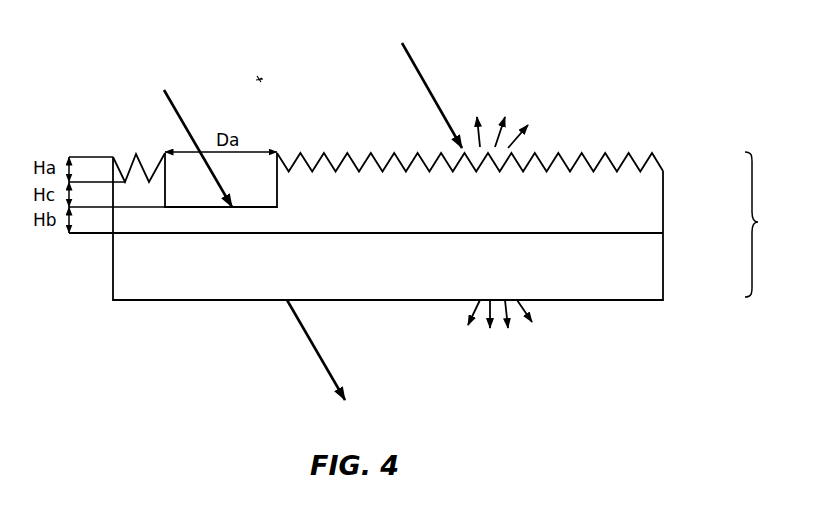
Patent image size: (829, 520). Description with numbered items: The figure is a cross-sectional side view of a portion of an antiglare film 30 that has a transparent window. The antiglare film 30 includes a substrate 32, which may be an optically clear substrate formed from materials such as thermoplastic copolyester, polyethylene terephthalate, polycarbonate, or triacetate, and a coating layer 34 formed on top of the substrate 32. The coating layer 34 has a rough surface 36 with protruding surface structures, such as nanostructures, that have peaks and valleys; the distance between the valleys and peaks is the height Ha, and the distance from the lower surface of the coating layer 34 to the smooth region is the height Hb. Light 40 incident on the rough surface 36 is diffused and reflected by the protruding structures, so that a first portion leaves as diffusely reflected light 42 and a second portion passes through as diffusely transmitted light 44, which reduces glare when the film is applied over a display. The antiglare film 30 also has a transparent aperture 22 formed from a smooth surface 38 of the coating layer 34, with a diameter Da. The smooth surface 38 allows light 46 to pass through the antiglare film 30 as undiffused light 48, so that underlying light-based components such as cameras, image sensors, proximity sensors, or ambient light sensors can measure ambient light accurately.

The transparent aperture 22 is at (258, 80).
The antiglare film 30 is at (452, 224).
The substrate 32 is at (665, 263).
The coating layer 34 is at (655, 193).
The rough surface 36 is at (136, 154).
The smooth surface 38 is at (278, 153).
The light 40 is at (410, 56).
The diffusely reflected light 42 is at (520, 128).
The diffusely transmitted light 44 is at (526, 325).
The light 46 is at (175, 107).
The undiffused light 48 is at (315, 345).